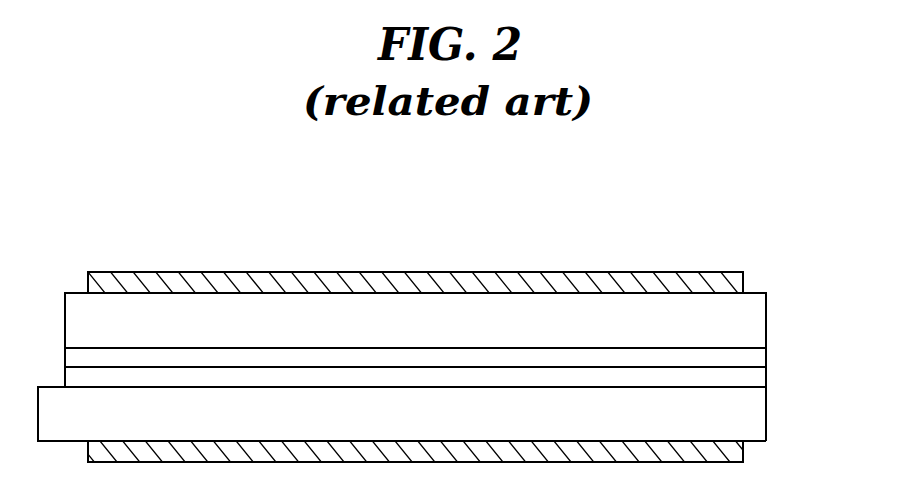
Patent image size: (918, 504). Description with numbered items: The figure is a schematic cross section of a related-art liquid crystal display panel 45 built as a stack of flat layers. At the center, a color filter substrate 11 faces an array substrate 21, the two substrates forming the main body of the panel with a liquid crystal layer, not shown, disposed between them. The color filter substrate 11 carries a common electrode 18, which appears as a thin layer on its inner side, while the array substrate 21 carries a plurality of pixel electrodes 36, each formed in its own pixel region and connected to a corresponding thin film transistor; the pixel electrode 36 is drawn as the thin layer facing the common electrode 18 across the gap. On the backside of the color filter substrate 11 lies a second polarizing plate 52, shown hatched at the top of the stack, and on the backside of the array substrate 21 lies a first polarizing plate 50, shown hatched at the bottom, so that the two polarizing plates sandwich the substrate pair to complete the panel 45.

The LCD panel 45 is at (649, 243).
The second polarizing plate 52 is at (743, 280).
The color filter substrate 11 is at (766, 441).
The common electrode 18 is at (758, 351).
The pixel electrode 36 is at (758, 374).
The array substrate 21 is at (430, 414).
The first polarizing plate 50 is at (743, 451).